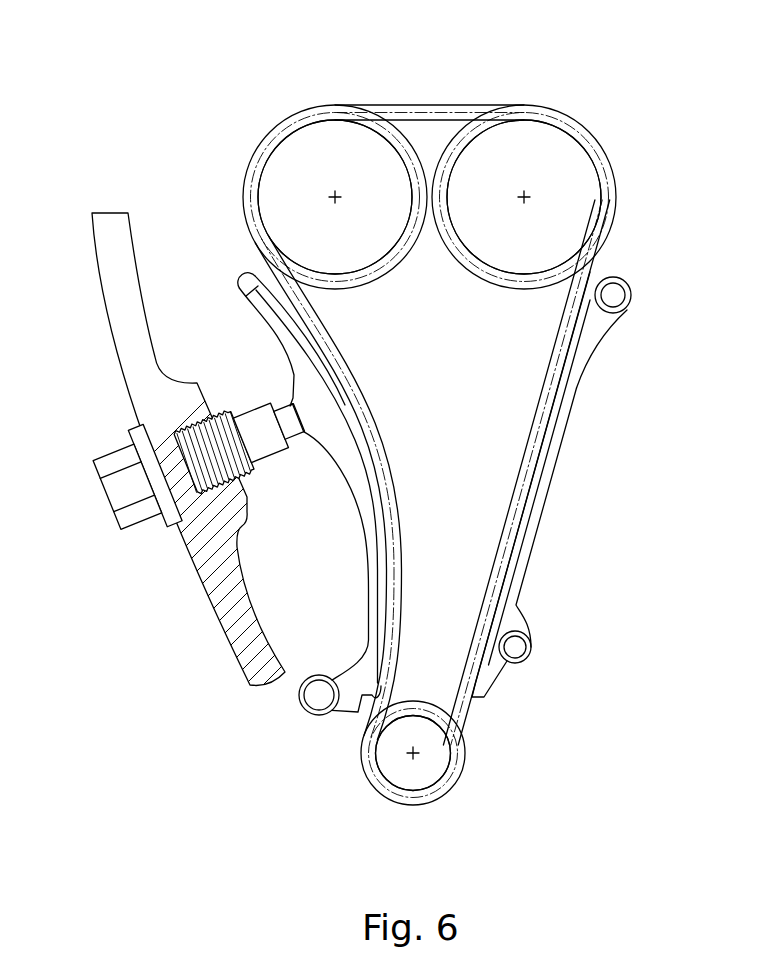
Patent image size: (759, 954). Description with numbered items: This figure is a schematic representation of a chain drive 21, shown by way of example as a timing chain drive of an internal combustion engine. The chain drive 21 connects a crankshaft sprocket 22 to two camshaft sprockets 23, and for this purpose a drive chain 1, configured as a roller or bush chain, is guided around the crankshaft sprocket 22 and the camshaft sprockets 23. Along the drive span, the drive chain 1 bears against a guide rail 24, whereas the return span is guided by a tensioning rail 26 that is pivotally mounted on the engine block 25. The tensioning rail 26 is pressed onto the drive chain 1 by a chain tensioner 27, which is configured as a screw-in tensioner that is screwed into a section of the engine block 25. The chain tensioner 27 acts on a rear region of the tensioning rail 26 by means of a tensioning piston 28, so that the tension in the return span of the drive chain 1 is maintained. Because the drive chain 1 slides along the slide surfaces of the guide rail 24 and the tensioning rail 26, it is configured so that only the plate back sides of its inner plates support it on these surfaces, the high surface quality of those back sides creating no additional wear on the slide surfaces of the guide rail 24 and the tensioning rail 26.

The drive chain 1 is at (432, 104).
The chain drive 21 is at (460, 419).
The crankshaft sprocket 22 is at (432, 768).
The camshaft sprockets 23 is at (303, 143).
The guide rail 24 is at (552, 490).
The engine block 25 is at (105, 302).
The tensioning rail 26 is at (358, 607).
The chain tensioner 27 is at (118, 535).
The tensioning piston 28 is at (298, 448).